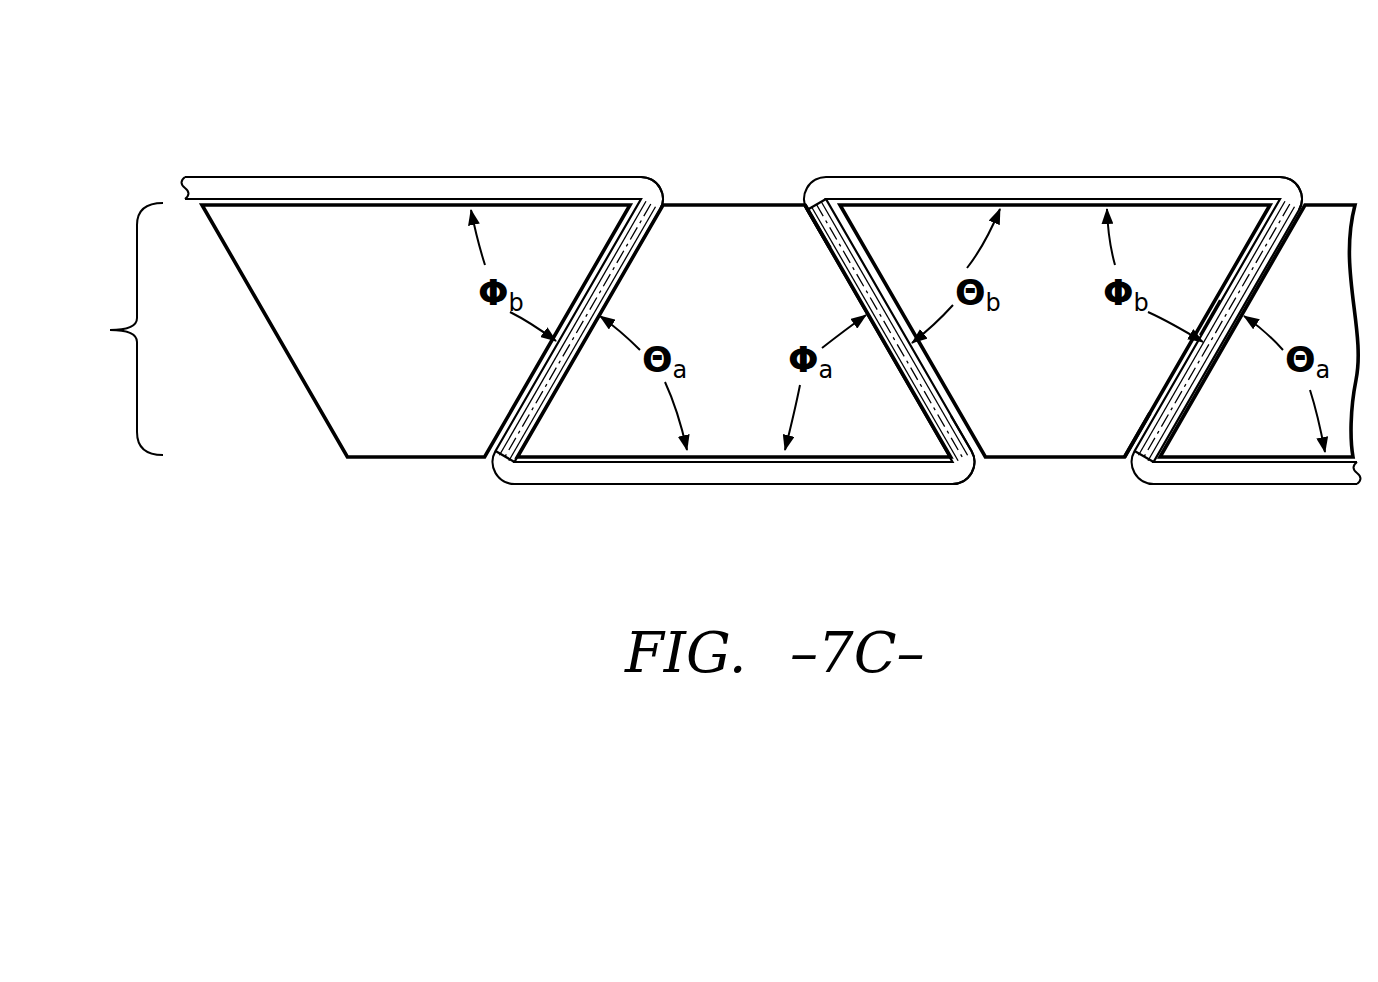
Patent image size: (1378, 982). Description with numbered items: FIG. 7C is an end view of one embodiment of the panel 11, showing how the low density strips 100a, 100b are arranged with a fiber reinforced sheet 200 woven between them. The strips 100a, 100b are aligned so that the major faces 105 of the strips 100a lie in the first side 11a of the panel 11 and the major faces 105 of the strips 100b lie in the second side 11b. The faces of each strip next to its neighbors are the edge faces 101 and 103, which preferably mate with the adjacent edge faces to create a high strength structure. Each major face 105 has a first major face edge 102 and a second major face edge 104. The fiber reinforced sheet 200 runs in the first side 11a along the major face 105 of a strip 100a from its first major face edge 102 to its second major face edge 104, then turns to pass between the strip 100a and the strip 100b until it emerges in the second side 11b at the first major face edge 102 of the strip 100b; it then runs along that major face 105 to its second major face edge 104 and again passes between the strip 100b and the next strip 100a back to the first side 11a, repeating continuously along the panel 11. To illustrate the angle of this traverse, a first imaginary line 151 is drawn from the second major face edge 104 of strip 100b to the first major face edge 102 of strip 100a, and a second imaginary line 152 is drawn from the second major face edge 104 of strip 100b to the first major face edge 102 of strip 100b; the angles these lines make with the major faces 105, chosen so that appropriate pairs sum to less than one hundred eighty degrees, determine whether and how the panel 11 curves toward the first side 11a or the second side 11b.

The core panel 11 is at (112, 329).
The first side of the core panel 11a is at (155, 489).
The second side of the core panel 11b is at (155, 183).
The strip 100a is at (770, 307).
The strip 100b is at (466, 369).
The edge face 101 is at (808, 233).
The first major face edge 102 is at (832, 200).
The edge face 103 is at (657, 233).
The second major face edge 104 is at (648, 192).
The major face 105 is at (1086, 192).
The first imaginary line 151 is at (558, 338).
The second imaginary line 152 is at (882, 318).
The fiber reinforced sheet 200 is at (415, 175).